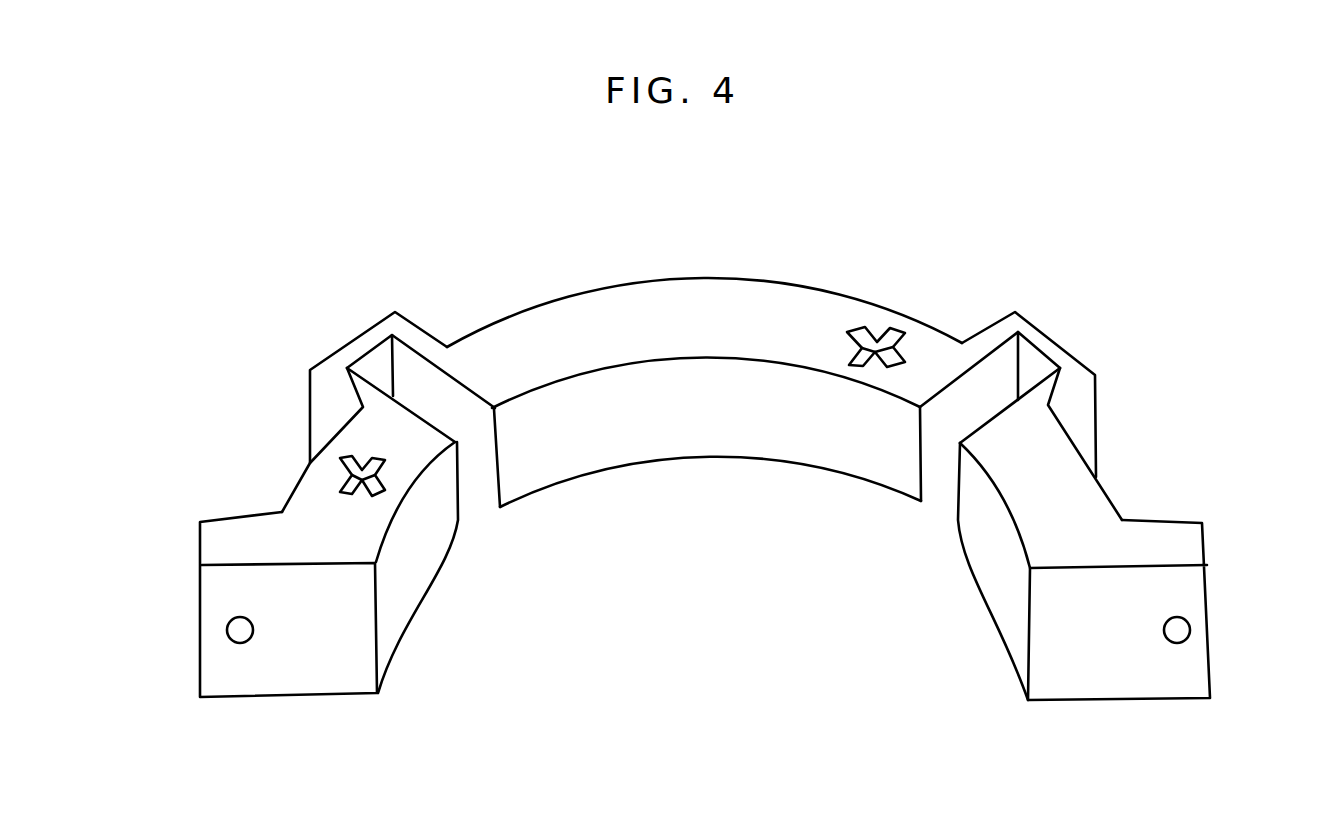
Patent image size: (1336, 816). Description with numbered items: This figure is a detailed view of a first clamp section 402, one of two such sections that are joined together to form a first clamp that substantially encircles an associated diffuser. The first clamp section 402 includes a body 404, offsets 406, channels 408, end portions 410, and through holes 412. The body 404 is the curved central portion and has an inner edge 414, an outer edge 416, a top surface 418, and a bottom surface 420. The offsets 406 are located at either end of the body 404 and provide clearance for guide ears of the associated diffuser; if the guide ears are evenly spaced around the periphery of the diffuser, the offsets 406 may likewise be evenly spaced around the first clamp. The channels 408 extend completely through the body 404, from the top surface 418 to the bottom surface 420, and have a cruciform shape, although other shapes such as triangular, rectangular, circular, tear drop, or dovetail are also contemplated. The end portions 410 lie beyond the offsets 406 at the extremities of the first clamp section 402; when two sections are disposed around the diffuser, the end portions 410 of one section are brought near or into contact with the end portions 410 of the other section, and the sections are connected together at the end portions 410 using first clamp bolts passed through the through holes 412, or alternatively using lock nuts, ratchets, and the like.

The first clamp section 402 is at (596, 249).
The body 404 is at (620, 471).
The offsets 406 is at (352, 332).
The channels 408 is at (340, 480).
The end portions 410 is at (342, 697).
The through holes 412 is at (237, 630).
The inner edge 414 is at (780, 423).
The outer edge 416 is at (786, 272).
The top surface 418 is at (748, 342).
The bottom surface 420 is at (760, 470).